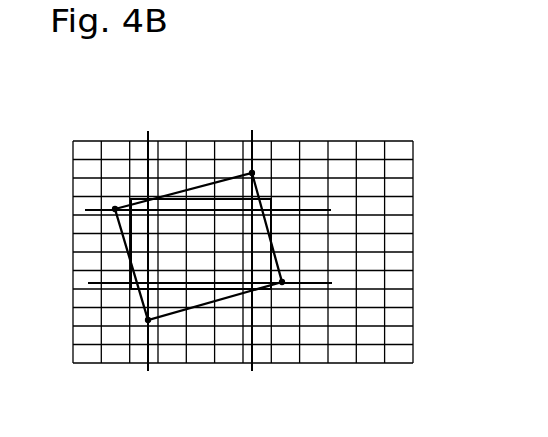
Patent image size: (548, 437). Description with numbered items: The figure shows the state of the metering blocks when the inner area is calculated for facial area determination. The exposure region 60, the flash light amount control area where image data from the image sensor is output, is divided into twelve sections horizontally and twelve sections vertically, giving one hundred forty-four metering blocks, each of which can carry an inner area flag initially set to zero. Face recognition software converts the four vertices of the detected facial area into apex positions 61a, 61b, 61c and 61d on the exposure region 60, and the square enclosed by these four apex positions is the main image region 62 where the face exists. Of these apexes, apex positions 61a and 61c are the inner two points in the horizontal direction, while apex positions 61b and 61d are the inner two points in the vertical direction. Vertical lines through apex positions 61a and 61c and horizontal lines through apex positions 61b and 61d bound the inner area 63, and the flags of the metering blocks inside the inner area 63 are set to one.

The exposure region 60 is at (236, 132).
The apex position 61a is at (268, 170).
The apex position 61b is at (104, 205).
The apex position 61c is at (130, 316).
The apex position 61d is at (290, 293).
The main image region 62 is at (190, 182).
The inner area 63 is at (285, 220).